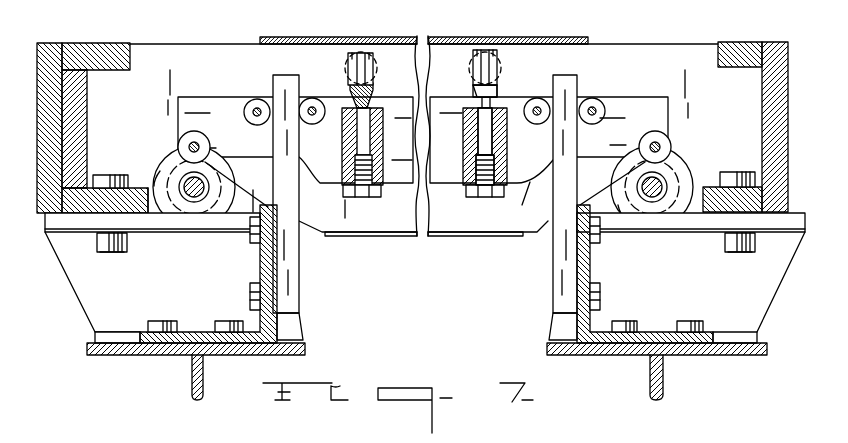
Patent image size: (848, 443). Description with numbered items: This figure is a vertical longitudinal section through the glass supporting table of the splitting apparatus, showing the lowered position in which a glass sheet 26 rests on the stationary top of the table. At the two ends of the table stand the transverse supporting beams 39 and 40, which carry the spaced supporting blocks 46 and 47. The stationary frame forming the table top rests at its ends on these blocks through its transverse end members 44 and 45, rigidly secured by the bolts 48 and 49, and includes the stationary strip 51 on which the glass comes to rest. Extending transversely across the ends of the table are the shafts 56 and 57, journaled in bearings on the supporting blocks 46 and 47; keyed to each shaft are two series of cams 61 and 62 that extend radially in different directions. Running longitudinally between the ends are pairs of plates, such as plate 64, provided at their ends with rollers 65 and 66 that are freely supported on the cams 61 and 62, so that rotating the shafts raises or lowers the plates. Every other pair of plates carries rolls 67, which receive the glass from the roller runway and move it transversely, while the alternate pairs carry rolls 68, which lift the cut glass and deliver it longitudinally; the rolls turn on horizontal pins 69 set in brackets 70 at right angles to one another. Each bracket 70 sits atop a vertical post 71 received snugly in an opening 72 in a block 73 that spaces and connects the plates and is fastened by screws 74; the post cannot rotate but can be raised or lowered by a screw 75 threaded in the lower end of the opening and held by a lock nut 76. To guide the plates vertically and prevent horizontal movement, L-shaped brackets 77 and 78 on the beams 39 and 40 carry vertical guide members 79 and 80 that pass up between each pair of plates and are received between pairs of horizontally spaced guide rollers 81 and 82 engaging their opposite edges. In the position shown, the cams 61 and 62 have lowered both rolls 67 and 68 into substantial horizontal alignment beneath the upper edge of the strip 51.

The glass sheet 26 is at (549, 36).
The transverse supporting beam 39 is at (192, 387).
The transverse supporting beam 40 is at (665, 370).
The transverse end member 44 is at (50, 45).
The transverse end member 45 is at (770, 105).
The supporting block 46 is at (83, 292).
The supporting block 47 is at (762, 283).
The bolt 48 is at (103, 254).
The bolt 49 is at (728, 240).
The stationary strip 51 is at (165, 62).
The shaft 56 is at (197, 196).
The shaft 57 is at (651, 196).
The cam 61 is at (173, 206).
The cam 62 is at (223, 208).
The plate 64 is at (228, 107).
The roller 65 is at (178, 134).
The roller 66 is at (650, 134).
The roll 67 is at (366, 50).
The roll 68 is at (347, 63).
The horizontal pin 69 is at (378, 70).
The bracket 70 is at (496, 92).
The vertical post 71 is at (478, 104).
The opening 72 is at (500, 138).
The block 73 is at (343, 154).
The screw 74 is at (512, 201).
The screw 75 is at (505, 163).
The lock nut 76 is at (468, 194).
The L-shaped bracket 77 is at (198, 332).
The L-shaped bracket 78 is at (653, 330).
The vertical guide member 79 is at (290, 266).
The vertical guide member 80 is at (550, 255).
The guide roller 81 is at (302, 118).
The guide roller 82 is at (553, 80).